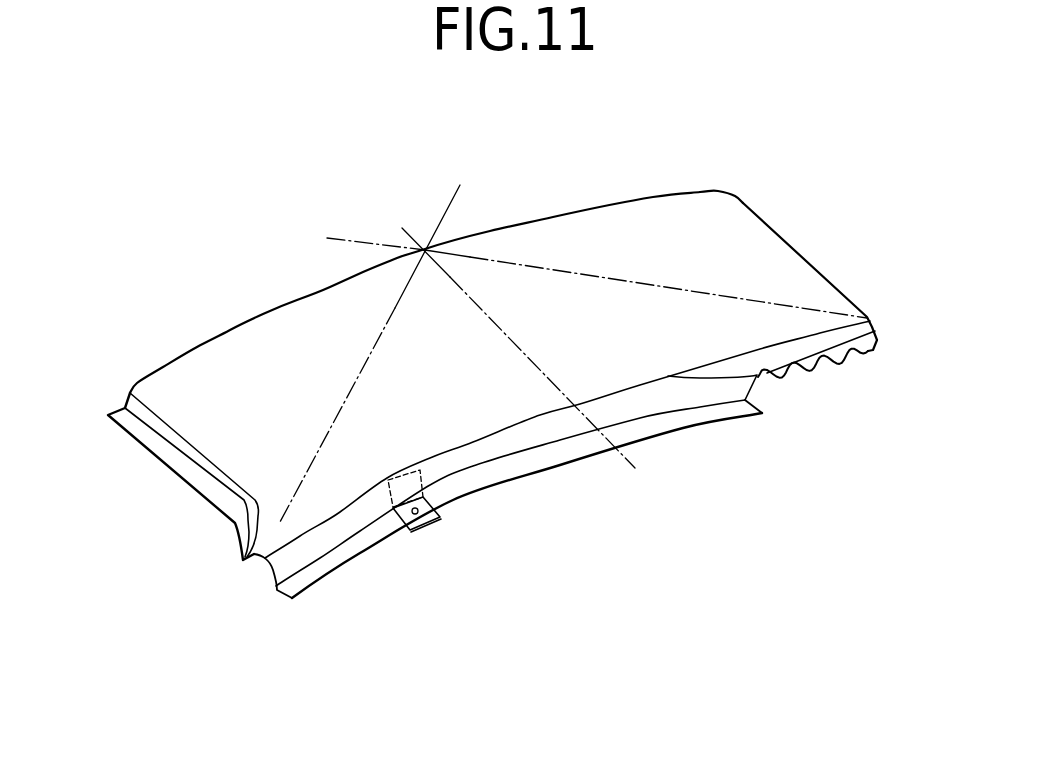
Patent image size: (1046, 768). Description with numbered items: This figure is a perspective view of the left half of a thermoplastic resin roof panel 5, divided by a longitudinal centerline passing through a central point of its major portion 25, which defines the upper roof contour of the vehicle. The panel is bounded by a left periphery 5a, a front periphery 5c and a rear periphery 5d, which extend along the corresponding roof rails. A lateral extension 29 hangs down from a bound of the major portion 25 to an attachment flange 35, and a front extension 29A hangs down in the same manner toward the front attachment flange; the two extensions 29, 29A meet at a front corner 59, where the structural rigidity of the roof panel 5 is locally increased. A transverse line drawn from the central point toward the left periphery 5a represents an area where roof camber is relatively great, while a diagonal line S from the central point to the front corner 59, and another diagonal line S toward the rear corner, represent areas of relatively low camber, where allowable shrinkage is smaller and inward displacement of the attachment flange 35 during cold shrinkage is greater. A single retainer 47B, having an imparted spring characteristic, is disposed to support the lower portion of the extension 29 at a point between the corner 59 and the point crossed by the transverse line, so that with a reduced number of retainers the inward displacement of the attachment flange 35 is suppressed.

The roof panel 5 is at (635, 243).
The left periphery 5a is at (545, 477).
The front periphery 5c is at (134, 441).
The rear periphery 5d is at (818, 259).
The major portion 25 is at (730, 230).
The lateral extension 29 is at (473, 460).
The front extension 29A is at (220, 480).
The attachment flange 35 is at (700, 427).
The retainer 47B is at (432, 529).
The corner 59 is at (253, 556).
The diagonal line S is at (547, 268).